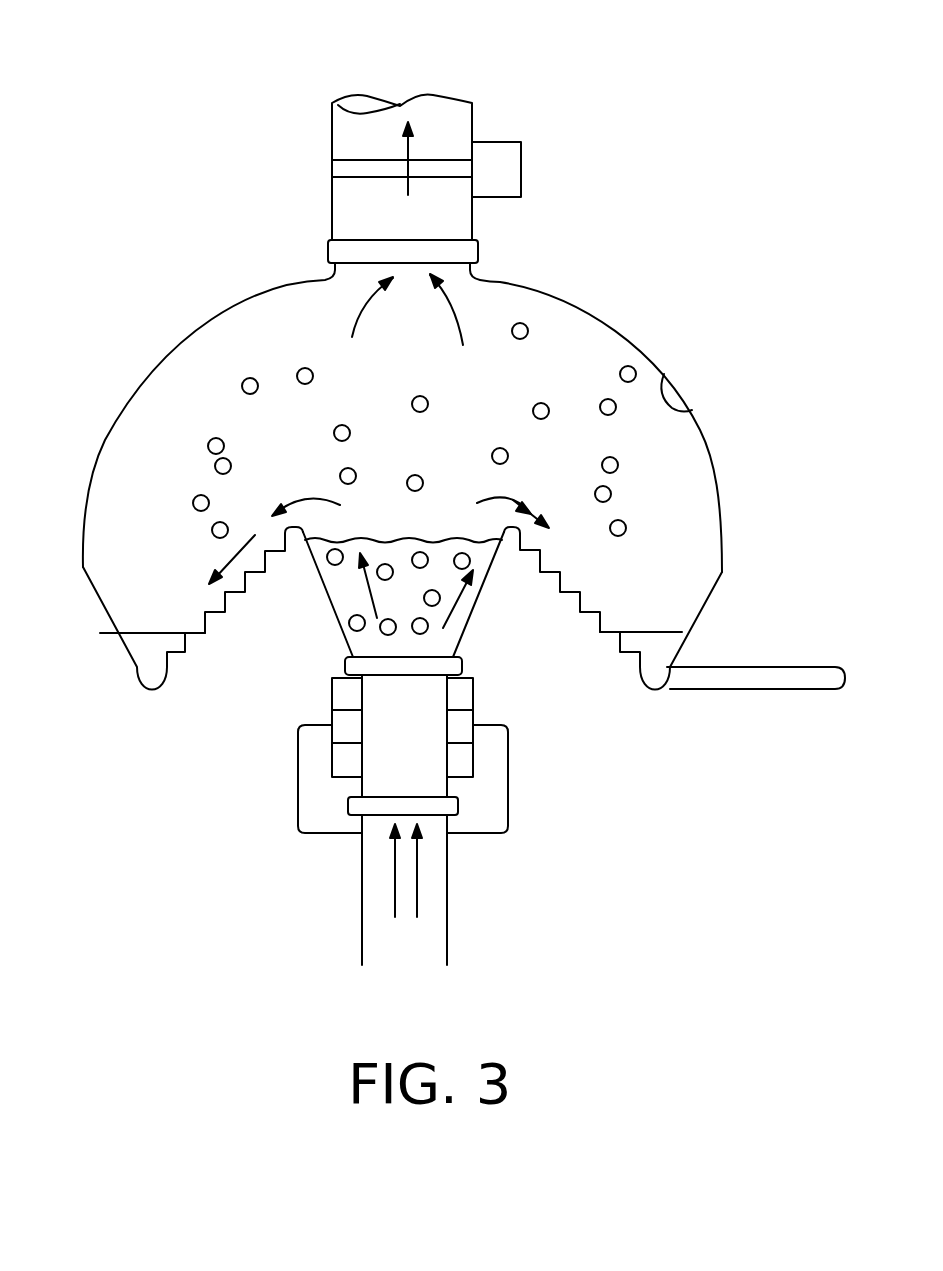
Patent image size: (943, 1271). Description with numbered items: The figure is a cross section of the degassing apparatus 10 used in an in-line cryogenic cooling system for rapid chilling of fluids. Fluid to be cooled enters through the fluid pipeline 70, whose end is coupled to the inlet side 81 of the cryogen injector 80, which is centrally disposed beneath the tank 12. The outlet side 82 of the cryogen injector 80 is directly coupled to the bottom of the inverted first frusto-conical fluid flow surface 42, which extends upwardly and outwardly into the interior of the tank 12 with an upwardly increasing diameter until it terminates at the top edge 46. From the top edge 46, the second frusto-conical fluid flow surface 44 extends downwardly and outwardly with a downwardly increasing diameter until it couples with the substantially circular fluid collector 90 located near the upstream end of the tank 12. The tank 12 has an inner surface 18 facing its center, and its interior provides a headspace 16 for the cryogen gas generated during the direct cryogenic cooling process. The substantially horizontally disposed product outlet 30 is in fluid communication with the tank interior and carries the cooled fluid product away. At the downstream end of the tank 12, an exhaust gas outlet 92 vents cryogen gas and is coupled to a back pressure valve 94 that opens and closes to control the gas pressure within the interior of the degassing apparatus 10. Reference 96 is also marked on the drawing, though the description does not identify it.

The degassing apparatus 10 is at (202, 152).
The tank 12 is at (132, 392).
The headspace 16 is at (426, 383).
The inner surface 18 is at (692, 410).
The product outlet 30 is at (743, 690).
The first frusto-conical fluid flow surface 42 is at (483, 585).
The second frusto-conical fluid flow surface 44 is at (210, 618).
The top edge 46 is at (520, 528).
The fluid pipeline 70 is at (448, 870).
The cryogen injector 80 is at (380, 760).
The inlet side 81 is at (457, 802).
The outlet side 82 is at (342, 667).
The fluid collector 90 is at (150, 692).
The exhaust gas outlet 92 is at (332, 155).
The back pressure valve 94 is at (533, 168).
The base rim 96 is at (102, 633).